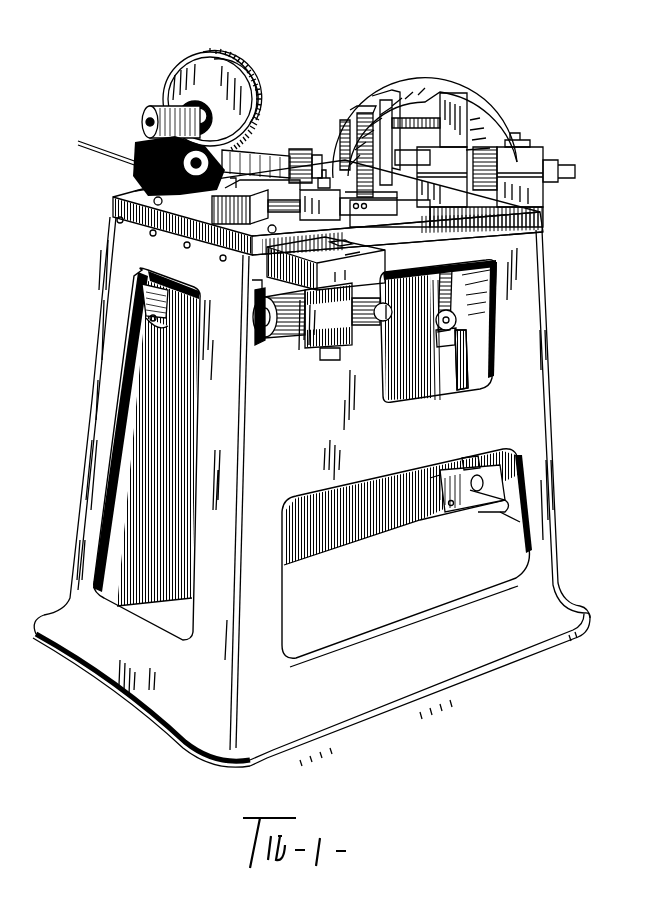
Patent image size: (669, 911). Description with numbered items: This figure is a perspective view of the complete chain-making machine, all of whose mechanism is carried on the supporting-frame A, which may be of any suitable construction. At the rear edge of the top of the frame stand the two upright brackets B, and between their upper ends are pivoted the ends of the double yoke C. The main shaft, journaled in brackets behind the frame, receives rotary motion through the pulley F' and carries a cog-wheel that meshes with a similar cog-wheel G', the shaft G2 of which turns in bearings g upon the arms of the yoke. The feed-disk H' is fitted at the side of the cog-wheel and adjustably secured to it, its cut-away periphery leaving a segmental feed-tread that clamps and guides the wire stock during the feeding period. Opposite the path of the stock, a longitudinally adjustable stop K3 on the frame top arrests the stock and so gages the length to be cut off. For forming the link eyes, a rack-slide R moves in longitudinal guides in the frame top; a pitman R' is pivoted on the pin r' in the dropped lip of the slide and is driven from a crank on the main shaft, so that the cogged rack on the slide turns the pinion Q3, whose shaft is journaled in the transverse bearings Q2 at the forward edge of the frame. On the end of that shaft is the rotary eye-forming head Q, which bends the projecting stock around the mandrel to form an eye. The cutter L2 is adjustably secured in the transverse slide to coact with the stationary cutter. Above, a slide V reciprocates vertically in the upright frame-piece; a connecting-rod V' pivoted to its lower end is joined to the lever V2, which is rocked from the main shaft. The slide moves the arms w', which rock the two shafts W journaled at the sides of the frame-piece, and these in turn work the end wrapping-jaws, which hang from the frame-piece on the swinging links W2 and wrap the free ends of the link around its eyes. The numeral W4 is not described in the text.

The feed-disk H' is at (210, 84).
The cog-wheel G' is at (232, 93).
The shaft G2 is at (150, 118).
The bearings g is at (148, 126).
The double yoke C is at (132, 172).
The upright brackets B is at (296, 168).
The rotary eye-forming head Q is at (324, 170).
The swinging links W2 is at (356, 138).
The upright W4 is at (400, 102).
The pulley F' is at (425, 128).
The arms w' is at (509, 163).
The rock-shafts W is at (569, 172).
The transverse bearings Q2 is at (170, 201).
The pinion Q3 is at (281, 230).
The stop K3 is at (373, 216).
The supporting-frame A is at (397, 233).
The slide V is at (462, 316).
The connecting-rod V' is at (487, 360).
The cutter L2 is at (372, 330).
The pitman R' is at (319, 309).
The rack-slide R is at (328, 333).
The pin r' is at (254, 331).
The lever V2 is at (434, 460).